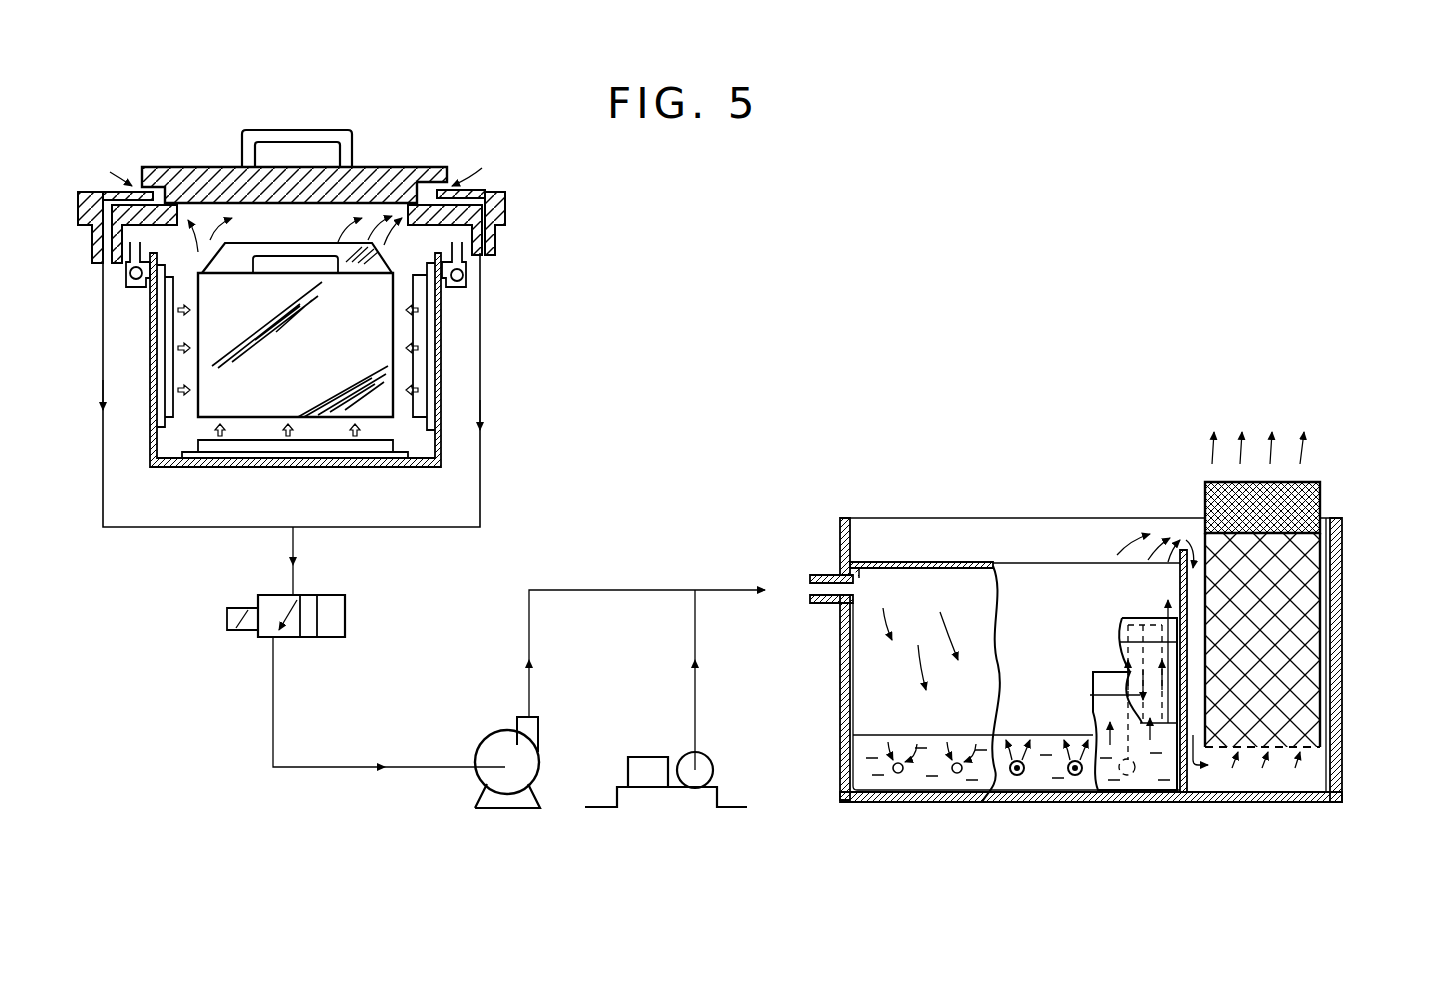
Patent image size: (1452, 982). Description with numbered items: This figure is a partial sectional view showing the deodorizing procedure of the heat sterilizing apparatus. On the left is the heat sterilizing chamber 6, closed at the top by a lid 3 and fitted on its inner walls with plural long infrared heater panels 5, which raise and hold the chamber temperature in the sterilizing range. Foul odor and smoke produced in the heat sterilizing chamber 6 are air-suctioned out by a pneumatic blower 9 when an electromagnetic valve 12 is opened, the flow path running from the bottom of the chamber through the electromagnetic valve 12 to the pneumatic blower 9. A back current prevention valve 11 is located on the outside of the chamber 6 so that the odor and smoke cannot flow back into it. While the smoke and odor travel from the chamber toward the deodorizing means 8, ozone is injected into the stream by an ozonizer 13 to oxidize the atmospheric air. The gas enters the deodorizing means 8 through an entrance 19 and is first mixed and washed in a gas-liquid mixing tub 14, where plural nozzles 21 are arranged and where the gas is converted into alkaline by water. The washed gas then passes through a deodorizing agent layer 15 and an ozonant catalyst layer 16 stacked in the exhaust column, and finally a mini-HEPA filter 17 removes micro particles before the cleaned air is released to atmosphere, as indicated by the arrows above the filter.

The lid 3 is at (397, 167).
The infrared heater panel 5 is at (420, 405).
The heat sterilizing chamber 6 is at (405, 247).
The deodorizing means 8 is at (928, 518).
The pneumatic blower 9 is at (505, 808).
The back current prevention valve 11 is at (465, 277).
The electromagnetic valve 12 is at (226, 620).
The ozonizer 13 is at (660, 797).
The gas-liquid mixing tub 14 is at (910, 778).
The deodorizing agent layer 15 is at (1285, 700).
The ozonant catalyst layer 16 is at (1295, 596).
The mini-HEPA filter 17 is at (1322, 500).
The entrance 19 is at (808, 600).
The nozzle 21 is at (1020, 780).